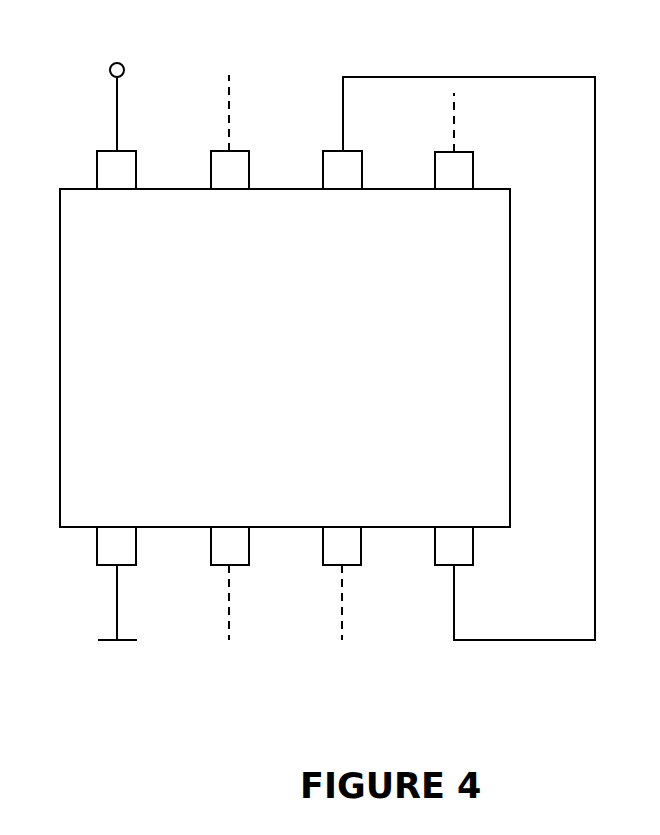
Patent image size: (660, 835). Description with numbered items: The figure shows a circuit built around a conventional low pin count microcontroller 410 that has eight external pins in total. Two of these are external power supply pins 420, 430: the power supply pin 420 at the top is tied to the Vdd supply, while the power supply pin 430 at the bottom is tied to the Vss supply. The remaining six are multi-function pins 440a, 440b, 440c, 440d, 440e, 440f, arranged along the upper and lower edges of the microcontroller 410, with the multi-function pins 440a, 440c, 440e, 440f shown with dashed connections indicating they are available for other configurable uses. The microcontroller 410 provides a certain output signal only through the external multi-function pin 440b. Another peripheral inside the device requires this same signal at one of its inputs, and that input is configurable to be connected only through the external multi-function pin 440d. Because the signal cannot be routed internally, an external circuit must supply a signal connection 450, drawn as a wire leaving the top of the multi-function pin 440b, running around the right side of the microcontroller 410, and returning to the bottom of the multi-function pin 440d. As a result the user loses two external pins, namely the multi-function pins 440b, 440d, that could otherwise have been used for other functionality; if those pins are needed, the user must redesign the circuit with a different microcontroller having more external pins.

The microcontroller 410 is at (503, 322).
The external power supply pin 420 is at (127, 158).
The external power supply pin 430 is at (110, 533).
The multi-function pin 440a is at (240, 158).
The multi-function pin 440b is at (353, 160).
The multi-function pin 440c is at (474, 160).
The multi-function pin 440d is at (453, 535).
The multi-function pin 440e is at (342, 538).
The multi-function pin 440f is at (229, 533).
The signal connection 450 is at (597, 477).